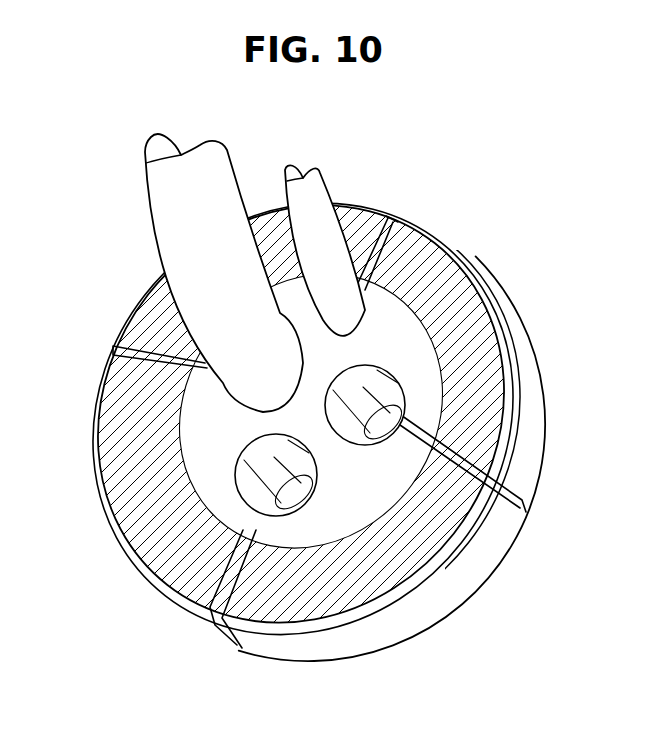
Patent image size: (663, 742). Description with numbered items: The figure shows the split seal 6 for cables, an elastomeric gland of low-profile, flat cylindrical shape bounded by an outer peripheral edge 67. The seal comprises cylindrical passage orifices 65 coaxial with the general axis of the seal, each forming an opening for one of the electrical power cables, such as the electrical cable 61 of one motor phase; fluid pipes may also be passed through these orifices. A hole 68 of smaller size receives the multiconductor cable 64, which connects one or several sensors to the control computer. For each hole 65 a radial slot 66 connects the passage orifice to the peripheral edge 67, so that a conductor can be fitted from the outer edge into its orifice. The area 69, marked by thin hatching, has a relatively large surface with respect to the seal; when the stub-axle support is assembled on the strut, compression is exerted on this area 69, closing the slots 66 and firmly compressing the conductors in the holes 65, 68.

The seal 6 is at (520, 299).
The electrical cable 61 is at (165, 203).
The multiconductor cable 64 is at (310, 197).
The passage orifice 65 is at (367, 407).
The radial slot 66 is at (150, 350).
The outer peripheral edge 67 is at (107, 515).
The hole 68 is at (377, 327).
The area 69 is at (477, 353).